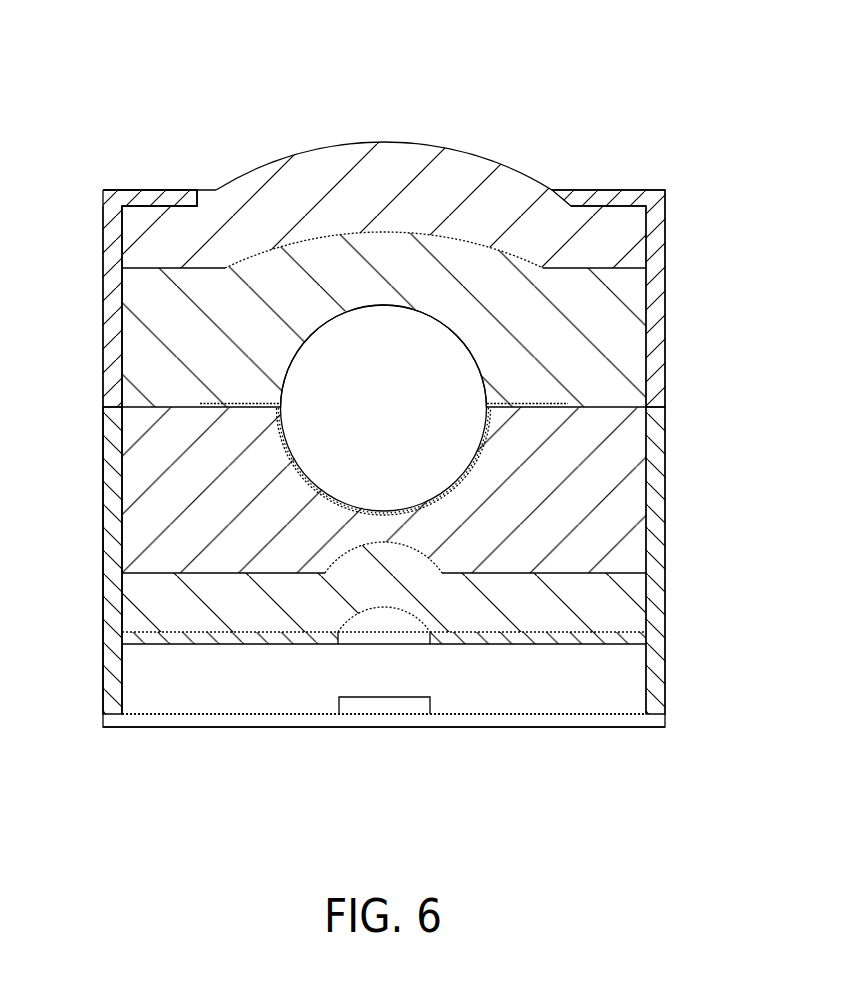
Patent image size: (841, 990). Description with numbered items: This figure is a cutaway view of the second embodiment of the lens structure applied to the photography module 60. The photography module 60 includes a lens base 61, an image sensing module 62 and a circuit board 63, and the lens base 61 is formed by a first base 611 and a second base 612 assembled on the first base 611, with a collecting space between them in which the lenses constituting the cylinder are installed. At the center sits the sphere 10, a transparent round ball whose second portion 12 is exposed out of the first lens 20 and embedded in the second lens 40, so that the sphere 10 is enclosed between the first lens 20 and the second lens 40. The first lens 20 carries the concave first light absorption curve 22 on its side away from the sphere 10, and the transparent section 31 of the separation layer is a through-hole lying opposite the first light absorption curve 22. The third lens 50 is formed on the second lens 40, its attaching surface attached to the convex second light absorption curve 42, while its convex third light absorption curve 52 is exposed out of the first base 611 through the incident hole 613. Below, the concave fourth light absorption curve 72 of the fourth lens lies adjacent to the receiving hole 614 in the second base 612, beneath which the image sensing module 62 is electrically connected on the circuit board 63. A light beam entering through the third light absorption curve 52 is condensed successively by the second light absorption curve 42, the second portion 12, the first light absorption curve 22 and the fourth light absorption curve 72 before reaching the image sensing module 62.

The photography module 60 is at (345, 464).
The lens base 61 is at (127, 186).
The first base 611 is at (118, 302).
The second base 612 is at (118, 652).
The incident hole 613 is at (203, 186).
The receiving hole 614 is at (355, 637).
The sphere 10 is at (263, 436).
The second portion 12 is at (348, 313).
The first lens 20 is at (376, 490).
The first light absorption curve 22 is at (335, 562).
The transparent section 31 is at (400, 510).
The second lens 40 is at (630, 327).
The second light absorption curve 42 is at (432, 232).
The third lens 50 is at (348, 184).
The third light absorption curve 52 is at (517, 172).
The image sensing module 62 is at (383, 703).
The circuit board 63 is at (384, 740).
The fourth light absorption curve 72 is at (345, 663).